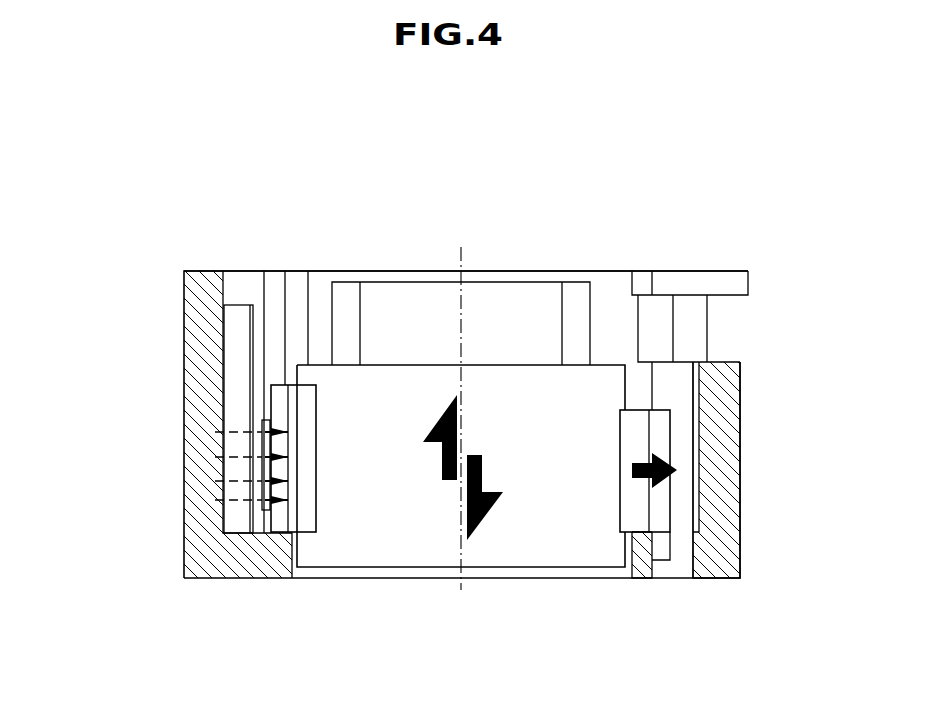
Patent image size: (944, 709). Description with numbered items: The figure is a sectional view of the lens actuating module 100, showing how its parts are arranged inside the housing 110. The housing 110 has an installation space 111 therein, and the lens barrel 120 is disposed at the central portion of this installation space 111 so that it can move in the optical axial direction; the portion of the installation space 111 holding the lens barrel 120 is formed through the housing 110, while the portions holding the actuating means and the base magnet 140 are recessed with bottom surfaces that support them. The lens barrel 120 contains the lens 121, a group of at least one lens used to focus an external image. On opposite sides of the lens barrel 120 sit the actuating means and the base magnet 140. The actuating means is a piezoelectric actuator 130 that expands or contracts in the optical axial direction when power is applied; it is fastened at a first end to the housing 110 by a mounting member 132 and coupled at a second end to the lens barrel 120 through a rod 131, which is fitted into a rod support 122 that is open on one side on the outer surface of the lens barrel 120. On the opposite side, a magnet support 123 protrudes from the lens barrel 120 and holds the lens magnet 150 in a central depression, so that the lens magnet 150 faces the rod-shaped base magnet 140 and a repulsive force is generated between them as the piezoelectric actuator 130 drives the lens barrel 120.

The lens actuating module 100 is at (218, 192).
The housing 110 is at (197, 560).
The installation space 111 is at (614, 287).
The lens barrel 120 is at (533, 555).
The lens 121 is at (415, 300).
The rod support 122 is at (662, 520).
The magnet support 123 is at (310, 515).
The piezoelectric actuator 130 is at (695, 323).
The rod 131 is at (678, 390).
The mounting member 132 is at (720, 275).
The base magnet 140 is at (233, 408).
The lens magnet 150 is at (268, 510).